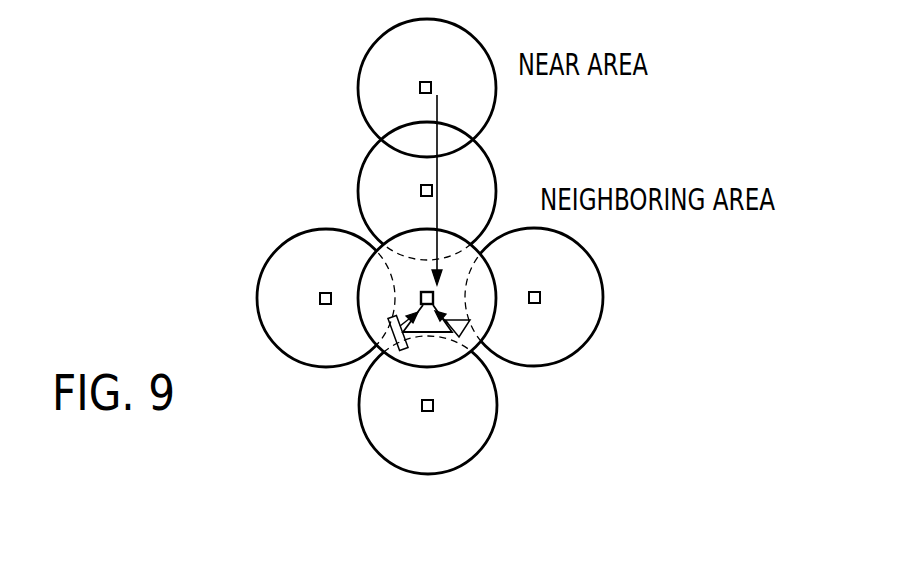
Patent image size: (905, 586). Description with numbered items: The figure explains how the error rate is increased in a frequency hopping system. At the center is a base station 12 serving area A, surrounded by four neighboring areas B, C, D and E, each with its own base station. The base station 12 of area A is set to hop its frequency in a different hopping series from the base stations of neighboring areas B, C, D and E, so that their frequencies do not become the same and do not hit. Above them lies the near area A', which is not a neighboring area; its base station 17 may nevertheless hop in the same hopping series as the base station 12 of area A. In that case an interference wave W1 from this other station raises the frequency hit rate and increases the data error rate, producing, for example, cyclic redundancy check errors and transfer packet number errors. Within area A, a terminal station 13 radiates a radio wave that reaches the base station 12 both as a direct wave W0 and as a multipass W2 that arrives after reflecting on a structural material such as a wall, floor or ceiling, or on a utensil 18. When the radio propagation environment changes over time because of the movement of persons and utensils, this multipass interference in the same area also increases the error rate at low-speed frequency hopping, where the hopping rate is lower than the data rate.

The base station 12 is at (423, 291).
The terminal station 13 is at (470, 335).
The base station 17 is at (426, 80).
The utensil 18 is at (392, 333).
The area A is at (414, 282).
The near area A' is at (399, 88).
The neighboring area B is at (359, 180).
The neighboring area C is at (257, 297).
The neighboring area D is at (497, 410).
The neighboring area E is at (603, 296).
The direct wave W0 is at (446, 312).
The interference wave W1 is at (438, 167).
The multipass W2 is at (403, 314).